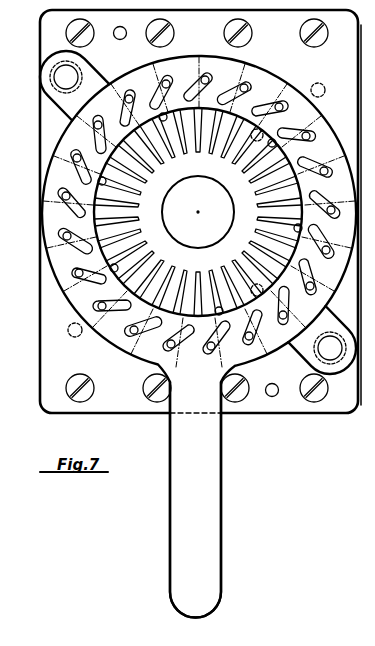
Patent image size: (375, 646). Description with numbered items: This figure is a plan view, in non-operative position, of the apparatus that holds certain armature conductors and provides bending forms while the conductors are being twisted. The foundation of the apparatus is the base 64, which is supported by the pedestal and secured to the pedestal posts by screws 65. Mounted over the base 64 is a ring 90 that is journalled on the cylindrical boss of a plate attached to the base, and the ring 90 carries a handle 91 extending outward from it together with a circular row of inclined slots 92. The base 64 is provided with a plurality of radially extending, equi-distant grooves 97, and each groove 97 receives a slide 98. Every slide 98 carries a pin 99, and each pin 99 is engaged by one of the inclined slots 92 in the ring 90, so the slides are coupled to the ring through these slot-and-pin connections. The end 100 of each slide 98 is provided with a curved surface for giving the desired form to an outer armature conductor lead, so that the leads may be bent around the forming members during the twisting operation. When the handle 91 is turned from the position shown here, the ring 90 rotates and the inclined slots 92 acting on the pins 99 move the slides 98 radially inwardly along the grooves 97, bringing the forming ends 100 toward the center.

The base 64 is at (271, 413).
The screws 65 is at (313, 403).
The ring 90 is at (57, 259).
The handle 91 is at (212, 535).
The inclined slots 92 is at (66, 209).
The grooves 97 is at (132, 196).
The slide 98 is at (100, 183).
The pin 99 is at (305, 79).
The end of slide 100 is at (122, 186).